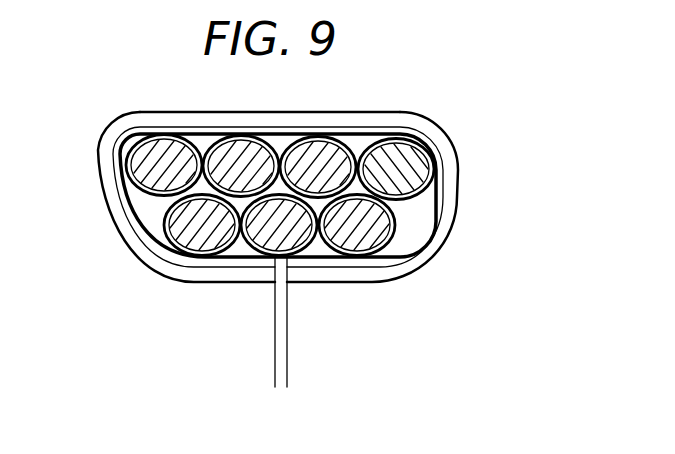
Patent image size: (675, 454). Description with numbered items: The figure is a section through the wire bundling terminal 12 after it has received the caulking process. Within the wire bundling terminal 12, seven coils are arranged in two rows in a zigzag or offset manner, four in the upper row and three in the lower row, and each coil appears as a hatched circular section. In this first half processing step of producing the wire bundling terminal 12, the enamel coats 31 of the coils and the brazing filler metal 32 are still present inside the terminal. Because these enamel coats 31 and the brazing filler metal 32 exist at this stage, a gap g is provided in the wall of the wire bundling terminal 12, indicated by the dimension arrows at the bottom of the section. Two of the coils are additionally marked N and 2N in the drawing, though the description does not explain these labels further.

The wire bundling terminal 12 is at (384, 116).
The enamel coats 31 is at (157, 248).
The brazing filler metal 32 is at (410, 243).
The N-th conductor N is at (420, 160).
The 2N-th conductor 2N is at (203, 255).
The gap g is at (228, 375).